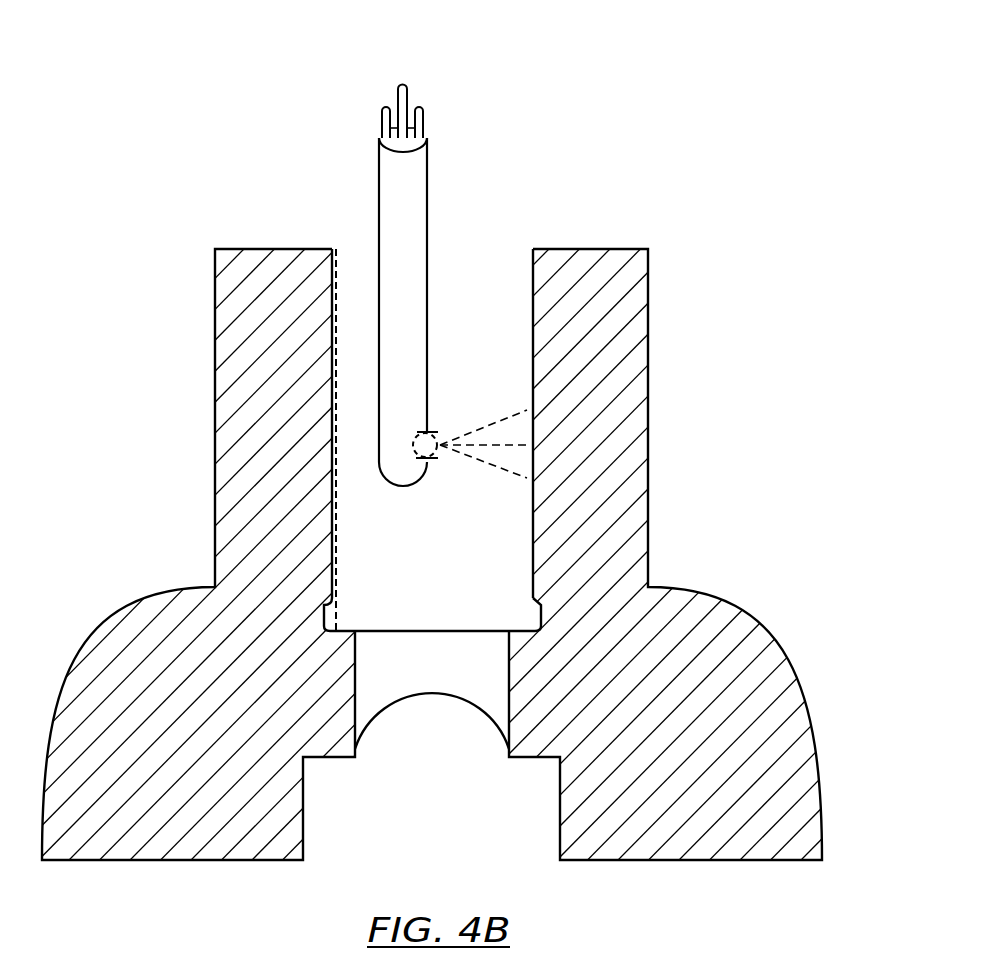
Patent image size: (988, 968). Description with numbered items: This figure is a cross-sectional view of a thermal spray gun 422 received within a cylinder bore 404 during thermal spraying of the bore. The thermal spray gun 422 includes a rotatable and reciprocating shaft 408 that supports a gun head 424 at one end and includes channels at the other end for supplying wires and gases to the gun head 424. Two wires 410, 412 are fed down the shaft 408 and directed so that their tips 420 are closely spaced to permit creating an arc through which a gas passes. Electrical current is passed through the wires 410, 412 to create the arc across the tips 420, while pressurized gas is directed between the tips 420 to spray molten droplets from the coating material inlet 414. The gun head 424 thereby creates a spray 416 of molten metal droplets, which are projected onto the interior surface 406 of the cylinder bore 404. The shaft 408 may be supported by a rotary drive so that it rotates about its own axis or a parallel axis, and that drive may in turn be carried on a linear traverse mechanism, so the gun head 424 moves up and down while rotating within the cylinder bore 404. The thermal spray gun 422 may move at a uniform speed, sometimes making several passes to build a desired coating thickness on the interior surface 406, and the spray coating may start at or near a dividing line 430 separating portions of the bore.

The cylinder bore 404 is at (412, 587).
The interior surface 406 is at (532, 282).
The shaft 408 is at (382, 305).
The wire 410 is at (387, 100).
The wire 412 is at (420, 100).
The coating material inlet 414 is at (403, 82).
The spray 416 is at (497, 420).
The tips 420 is at (435, 462).
The thermal spray gun 422 is at (430, 173).
The gun head 424 is at (400, 486).
The dividing line 430 is at (336, 245).